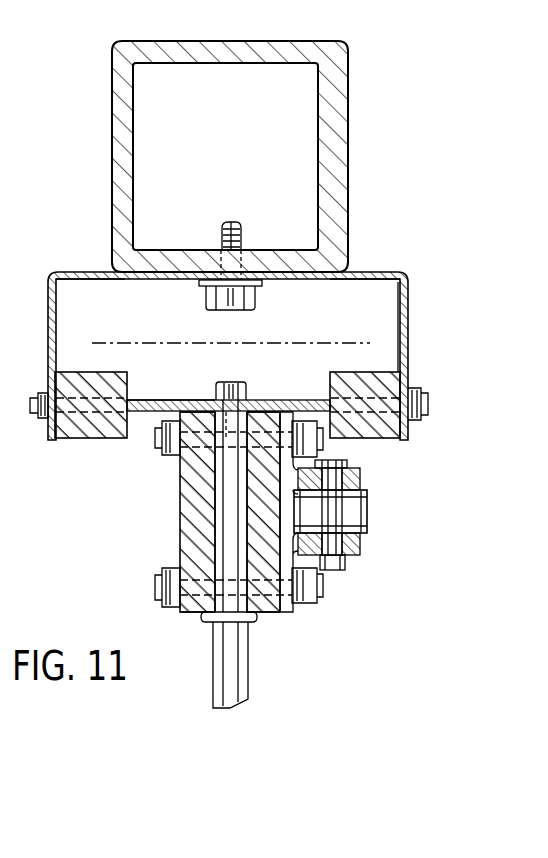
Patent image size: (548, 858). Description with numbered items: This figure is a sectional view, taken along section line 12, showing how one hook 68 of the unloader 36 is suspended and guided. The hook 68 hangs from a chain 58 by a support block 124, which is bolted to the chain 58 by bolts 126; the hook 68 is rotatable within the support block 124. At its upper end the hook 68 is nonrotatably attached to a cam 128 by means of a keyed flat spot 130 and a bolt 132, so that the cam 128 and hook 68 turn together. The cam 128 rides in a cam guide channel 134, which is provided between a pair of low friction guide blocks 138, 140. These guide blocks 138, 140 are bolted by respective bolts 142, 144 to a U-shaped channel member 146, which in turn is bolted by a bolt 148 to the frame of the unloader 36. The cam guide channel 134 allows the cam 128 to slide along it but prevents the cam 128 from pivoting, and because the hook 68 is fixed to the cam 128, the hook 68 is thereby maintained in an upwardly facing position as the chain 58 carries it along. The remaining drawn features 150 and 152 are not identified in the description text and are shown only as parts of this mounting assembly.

The unloader 36 is at (104, 166).
The U-shaped channel member 146 is at (358, 272).
The bolt 148 is at (252, 300).
The section line 12 is at (108, 338).
The bracket flange 152 is at (127, 375).
The cam guide channel 134 is at (322, 368).
The low friction guide block 140 is at (80, 440).
The bolt 144 is at (37, 404).
The bolt 142 is at (421, 405).
The low friction guide block 138 is at (400, 372).
The right bolt 150 is at (318, 437).
The keyed flat spot 130 is at (263, 404).
The cam 128 is at (213, 400).
The bolt 132 is at (246, 372).
The support block 124 is at (180, 512).
The bolts 126 is at (165, 448).
The chain 58 is at (367, 515).
The hook 68 is at (250, 672).